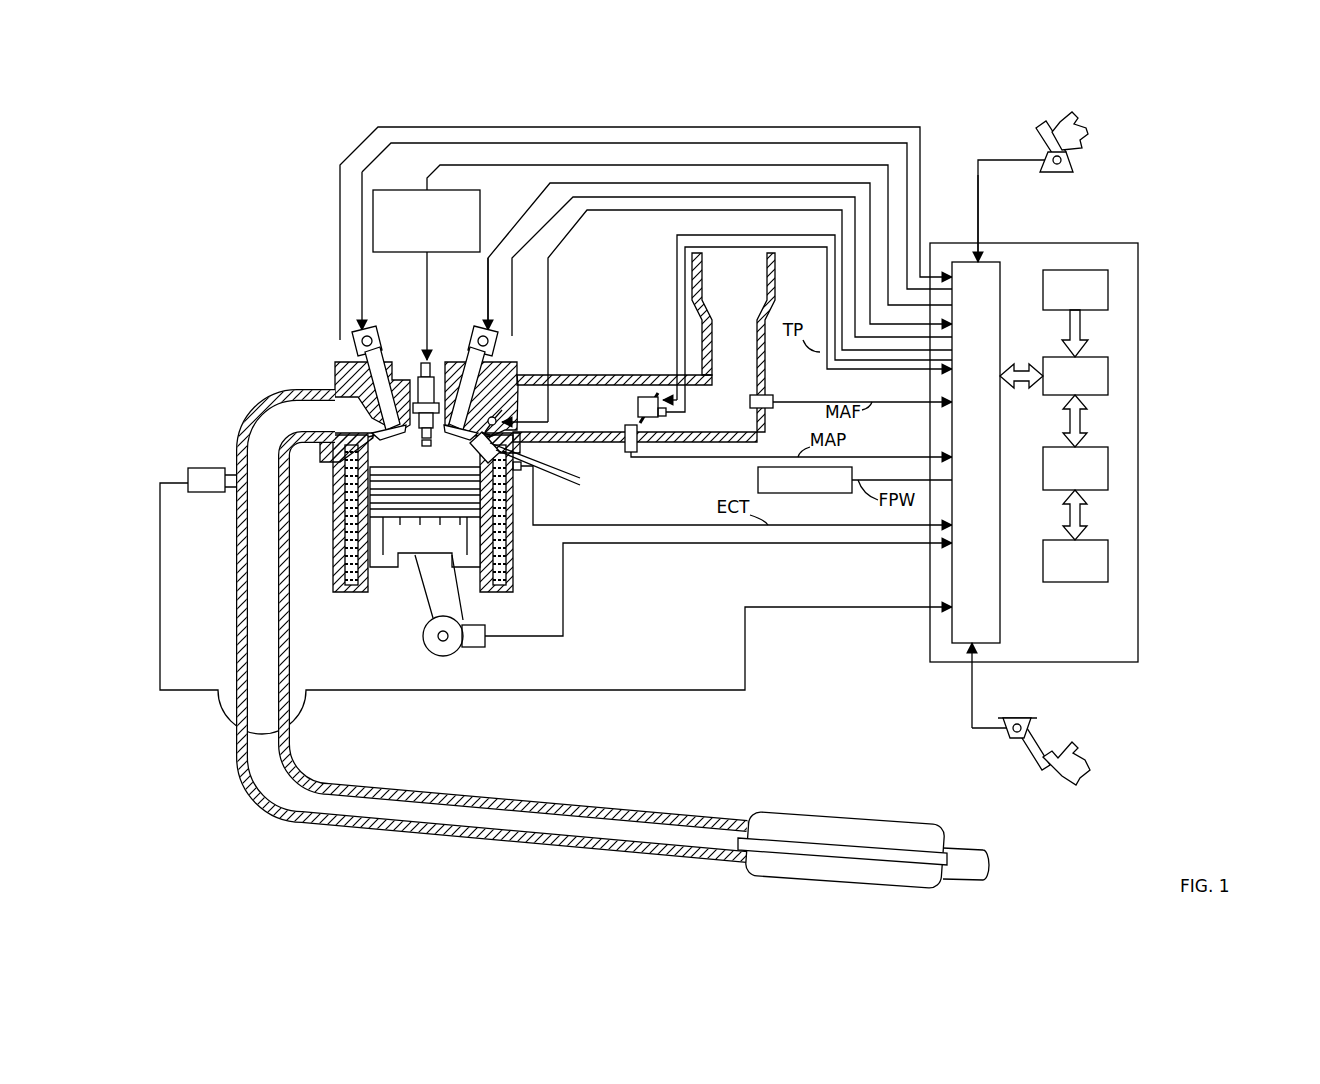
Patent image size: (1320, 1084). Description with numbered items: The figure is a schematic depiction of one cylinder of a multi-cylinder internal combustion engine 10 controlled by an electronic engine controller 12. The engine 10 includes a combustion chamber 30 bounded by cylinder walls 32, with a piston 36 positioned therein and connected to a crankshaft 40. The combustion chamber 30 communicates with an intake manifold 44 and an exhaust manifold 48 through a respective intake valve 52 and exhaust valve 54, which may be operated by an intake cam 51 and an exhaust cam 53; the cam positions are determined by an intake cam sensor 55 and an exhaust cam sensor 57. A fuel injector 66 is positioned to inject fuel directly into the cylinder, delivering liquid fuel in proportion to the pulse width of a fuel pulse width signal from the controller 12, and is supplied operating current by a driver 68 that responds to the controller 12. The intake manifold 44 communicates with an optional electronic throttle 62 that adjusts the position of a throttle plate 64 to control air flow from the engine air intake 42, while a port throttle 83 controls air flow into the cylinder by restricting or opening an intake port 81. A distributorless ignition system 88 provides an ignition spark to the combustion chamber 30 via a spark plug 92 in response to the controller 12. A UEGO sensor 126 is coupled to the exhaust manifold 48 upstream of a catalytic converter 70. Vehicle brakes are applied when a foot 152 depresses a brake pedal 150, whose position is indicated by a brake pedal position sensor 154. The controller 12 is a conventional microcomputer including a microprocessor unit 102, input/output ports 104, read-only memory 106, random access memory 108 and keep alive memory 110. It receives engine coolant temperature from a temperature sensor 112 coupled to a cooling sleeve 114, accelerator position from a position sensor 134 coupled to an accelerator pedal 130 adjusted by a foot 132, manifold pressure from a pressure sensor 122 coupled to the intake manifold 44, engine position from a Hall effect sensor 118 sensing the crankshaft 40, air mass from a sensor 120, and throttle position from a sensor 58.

The internal combustion engine 10 is at (272, 313).
The electronic engine controller 12 is at (1138, 243).
The combustion chamber 30 is at (423, 450).
The cylinder walls 32 is at (365, 597).
The piston 36 is at (410, 555).
The crankshaft 40 is at (432, 652).
The engine air intake 42 is at (733, 342).
The intake manifold 44 is at (635, 408).
The exhaust manifold 48 is at (494, 626).
The intake cam 51 is at (483, 330).
The intake valve 52 is at (430, 378).
The exhaust cam 53 is at (366, 330).
The exhaust valve 54 is at (352, 400).
The intake cam sensor 55 is at (500, 345).
The exhaust cam sensor 57 is at (352, 348).
The throttle position sensor 58 is at (668, 413).
The electronic throttle 62 is at (645, 395).
The throttle plate 64 is at (660, 395).
The fuel injector 66 is at (529, 466).
The driver 68 is at (842, 494).
The catalytic converter 70 is at (750, 875).
The intake port 81 is at (500, 421).
The port throttle 83 is at (500, 416).
The distributorless ignition system 88 is at (392, 190).
The spark plug 92 is at (420, 370).
The microprocessor unit 102 is at (1108, 372).
The input/output ports 104 is at (1003, 270).
The read-only memory 106 is at (1108, 285).
The random access memory 108 is at (1108, 468).
The keep alive memory 110 is at (1108, 560).
The temperature sensor 112 is at (520, 470).
The cooling sleeve 114 is at (510, 570).
The Hall effect sensor 118 is at (475, 650).
The air mass sensor 120 is at (772, 398).
The pressure sensor 122 is at (620, 455).
The UEGO sensor 126 is at (188, 475).
The accelerator pedal 130 is at (1045, 140).
The foot 132 is at (1100, 122).
The position sensor 134 is at (1075, 162).
The brake pedal 150 is at (1040, 768).
The foot 152 is at (1072, 740).
The brake pedal position sensor 154 is at (1005, 718).